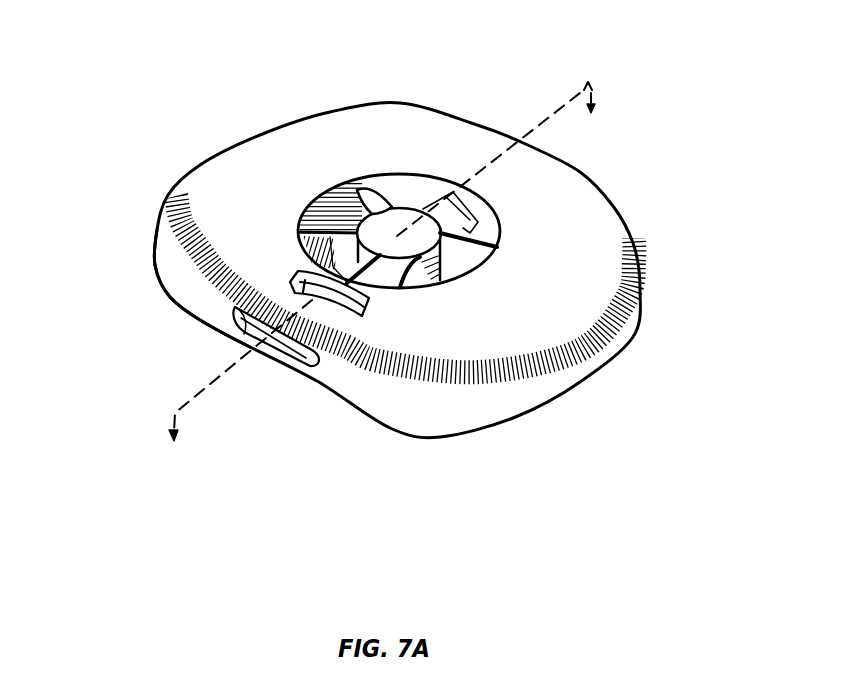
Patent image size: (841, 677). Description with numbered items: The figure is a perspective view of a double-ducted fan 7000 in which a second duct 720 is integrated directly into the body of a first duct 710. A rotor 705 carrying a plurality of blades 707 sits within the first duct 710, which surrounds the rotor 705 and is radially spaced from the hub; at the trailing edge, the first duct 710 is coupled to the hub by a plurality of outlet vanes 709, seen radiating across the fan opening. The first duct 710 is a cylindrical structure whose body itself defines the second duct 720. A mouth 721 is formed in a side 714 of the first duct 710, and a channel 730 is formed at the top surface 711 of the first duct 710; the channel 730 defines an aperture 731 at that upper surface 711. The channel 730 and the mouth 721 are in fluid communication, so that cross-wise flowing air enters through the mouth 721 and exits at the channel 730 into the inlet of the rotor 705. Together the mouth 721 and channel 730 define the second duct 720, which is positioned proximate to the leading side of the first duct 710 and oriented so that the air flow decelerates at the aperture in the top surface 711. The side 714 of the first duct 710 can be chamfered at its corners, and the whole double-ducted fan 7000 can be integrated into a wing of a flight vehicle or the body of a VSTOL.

The double-ducted fan 7000 is at (250, 58).
The rotor 705 is at (398, 224).
The blades 707 is at (463, 215).
The outlet vanes 709 is at (302, 233).
The first duct 710 is at (600, 228).
The top surface 711 is at (480, 150).
The side 714 is at (192, 290).
The second duct 720 is at (317, 366).
The mouth 721 is at (247, 333).
The channel 730 is at (300, 292).
The aperture 731 is at (362, 316).